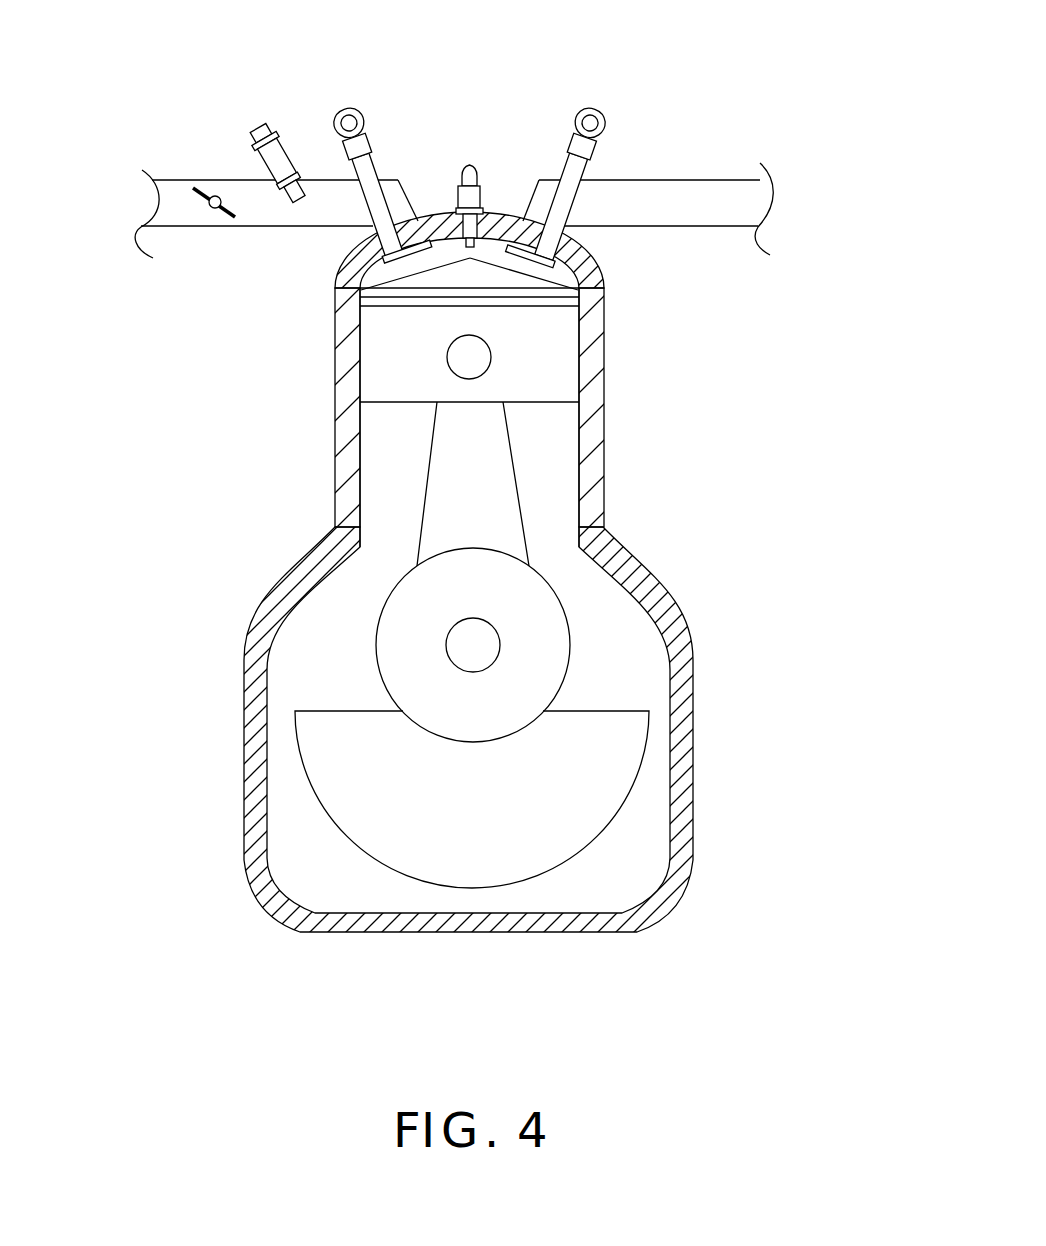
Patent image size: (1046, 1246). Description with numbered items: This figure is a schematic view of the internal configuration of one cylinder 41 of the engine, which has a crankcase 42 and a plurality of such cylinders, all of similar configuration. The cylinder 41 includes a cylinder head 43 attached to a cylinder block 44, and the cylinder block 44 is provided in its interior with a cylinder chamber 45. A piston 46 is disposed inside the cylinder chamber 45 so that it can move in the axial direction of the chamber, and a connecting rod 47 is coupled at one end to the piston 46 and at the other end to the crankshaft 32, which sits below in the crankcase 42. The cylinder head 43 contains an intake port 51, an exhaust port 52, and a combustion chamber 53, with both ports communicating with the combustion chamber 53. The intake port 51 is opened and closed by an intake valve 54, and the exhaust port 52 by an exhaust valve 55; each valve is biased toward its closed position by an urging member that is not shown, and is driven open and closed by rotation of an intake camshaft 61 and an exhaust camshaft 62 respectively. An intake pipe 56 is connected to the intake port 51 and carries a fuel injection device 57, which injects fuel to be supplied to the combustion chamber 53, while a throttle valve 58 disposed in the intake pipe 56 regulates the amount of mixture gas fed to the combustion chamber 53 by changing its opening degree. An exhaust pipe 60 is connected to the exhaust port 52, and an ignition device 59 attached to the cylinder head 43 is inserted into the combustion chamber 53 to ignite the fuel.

The crankshaft 32 is at (485, 640).
The cylinder 41 is at (290, 372).
The crankcase 42 is at (260, 795).
The cylinder head 43 is at (353, 268).
The cylinder block 44 is at (350, 500).
The cylinder chamber 45 is at (388, 445).
The piston 46 is at (548, 362).
The connecting rod 47 is at (487, 482).
The intake port 51 is at (433, 213).
The exhaust port 52 is at (508, 233).
The combustion chamber 53 is at (450, 252).
The intake valve 54 is at (380, 308).
The exhaust valve 55 is at (525, 270).
The intake pipe 56 is at (198, 180).
The fuel injection device 57 is at (284, 138).
The throttle valve 58 is at (197, 204).
The ignition device 59 is at (474, 193).
The exhaust pipe 60 is at (668, 180).
The intake camshaft 61 is at (346, 106).
The exhaust camshaft 62 is at (589, 115).